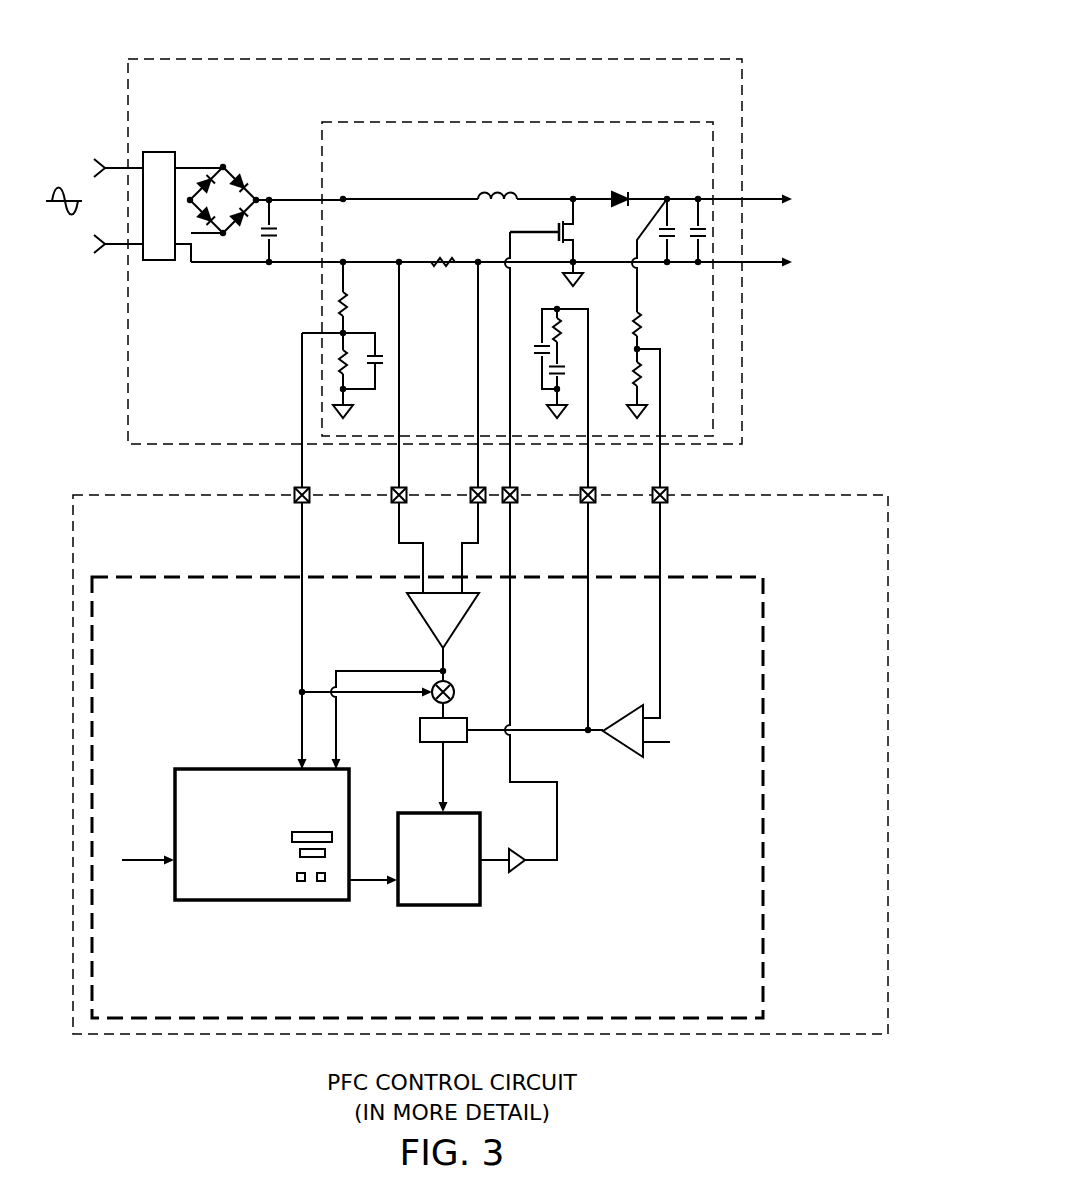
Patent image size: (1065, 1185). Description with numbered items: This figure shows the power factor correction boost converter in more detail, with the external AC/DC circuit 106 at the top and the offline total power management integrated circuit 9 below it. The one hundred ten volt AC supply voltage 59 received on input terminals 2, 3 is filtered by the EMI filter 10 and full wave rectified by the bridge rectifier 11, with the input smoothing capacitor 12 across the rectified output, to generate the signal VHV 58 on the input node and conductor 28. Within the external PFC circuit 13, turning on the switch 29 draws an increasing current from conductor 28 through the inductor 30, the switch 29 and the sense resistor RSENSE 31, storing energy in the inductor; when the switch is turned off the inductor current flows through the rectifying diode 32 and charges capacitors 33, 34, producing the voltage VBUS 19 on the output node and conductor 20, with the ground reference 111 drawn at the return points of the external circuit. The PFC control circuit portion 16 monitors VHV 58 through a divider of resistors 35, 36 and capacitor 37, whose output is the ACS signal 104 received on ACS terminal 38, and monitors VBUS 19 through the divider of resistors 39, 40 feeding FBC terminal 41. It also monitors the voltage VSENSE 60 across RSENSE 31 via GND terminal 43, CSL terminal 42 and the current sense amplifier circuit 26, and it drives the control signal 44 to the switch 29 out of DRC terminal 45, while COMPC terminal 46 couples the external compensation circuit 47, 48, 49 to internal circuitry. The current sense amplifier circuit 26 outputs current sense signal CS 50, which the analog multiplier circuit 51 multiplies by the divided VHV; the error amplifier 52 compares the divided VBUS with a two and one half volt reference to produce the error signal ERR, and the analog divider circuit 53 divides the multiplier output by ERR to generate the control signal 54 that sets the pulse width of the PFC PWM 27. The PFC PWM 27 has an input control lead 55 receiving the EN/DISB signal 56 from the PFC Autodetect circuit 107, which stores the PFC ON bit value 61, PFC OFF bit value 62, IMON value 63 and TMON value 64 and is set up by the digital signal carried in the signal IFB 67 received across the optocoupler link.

The AC supply voltage input terminal 2 is at (109, 165).
The AC supply voltage input terminal 3 is at (108, 247).
The Offline Total Power Management Integrated Circuit 9 is at (480, 764).
The EMI filter 10 is at (164, 147).
The full bridge rectifier 11 is at (237, 283).
The input smoothing capacitor 12 is at (276, 235).
The external Power Factor Correction circuit 13 is at (517, 279).
The PFC control circuit portion 16 is at (427, 797).
The VBUS 19 is at (766, 185).
The output node and conductor 20 is at (728, 197).
The current sense amplifier circuit 26 is at (420, 618).
The PFC Pulse Width Modulator 27 is at (461, 859).
The input node and conductor 28 is at (314, 197).
The switch 29 is at (578, 231).
The inductor 30 is at (518, 195).
The sense resistor RSENSE 31 is at (442, 257).
The rectifying diode 32 is at (623, 207).
The capacitor 33 is at (672, 237).
The capacitor 34 is at (695, 227).
The resistor 35 is at (348, 302).
The resistor 36 is at (346, 366).
The capacitor 37 is at (377, 359).
The ACS terminal 38 is at (294, 493).
The resistor 39 is at (646, 323).
The resistor 40 is at (633, 373).
The FBC terminal 41 is at (668, 493).
The CSL terminal 42 is at (391, 493).
The GND terminal 43 is at (470, 493).
The control signal 44 is at (517, 653).
The DRC terminal 45 is at (518, 493).
The COMPC terminal 46 is at (582, 502).
The external compensation circuit component 47 is at (563, 337).
The external compensation circuit component 48 is at (561, 375).
The external compensation circuit component 49 is at (535, 343).
The current sense signal CS 50 is at (431, 662).
The analog multiplier circuit 51 is at (453, 682).
The error amplifier 52 is at (612, 747).
The analog divider circuit 53 is at (418, 724).
The control signal 54 is at (432, 758).
The input control lead 55 is at (394, 878).
The EN/DISB signal 56 is at (356, 888).
The VHV 58 is at (279, 184).
The 110 volt AC supply voltage 59 is at (79, 194).
The VSENSE 60 is at (456, 278).
The PFC ON bit value 61 is at (321, 882).
The PFC OFF bit value 62 is at (300, 882).
The IMON value 63 is at (300, 853).
The TMON value 64 is at (318, 832).
The signal IFB 67 is at (152, 877).
The ACS signal 104 is at (290, 706).
The external AC/DC circuit 106 is at (465, 59).
The PFC Autodetect circuit 107 is at (262, 834).
The ground / ID current 111 is at (354, 411).